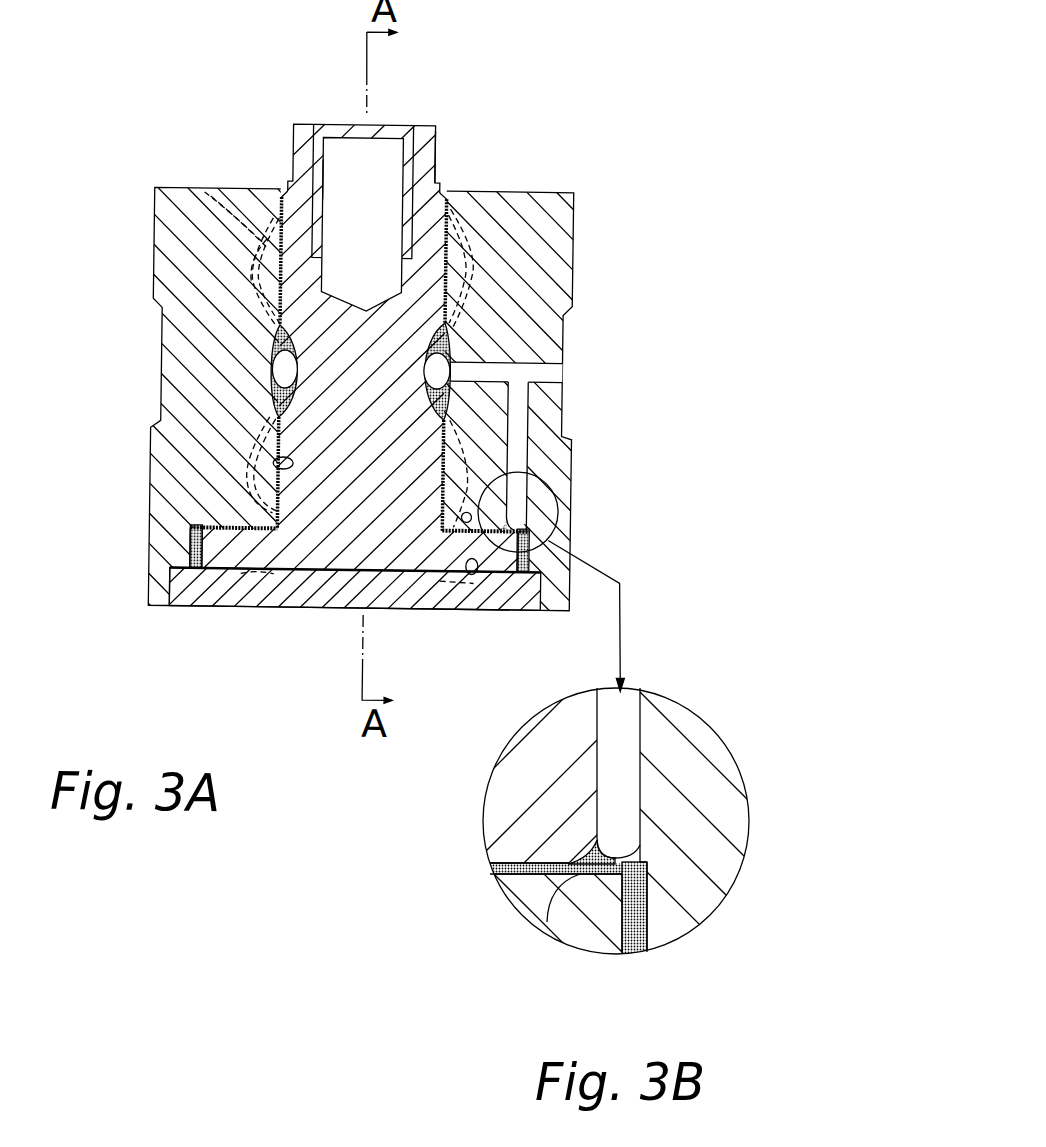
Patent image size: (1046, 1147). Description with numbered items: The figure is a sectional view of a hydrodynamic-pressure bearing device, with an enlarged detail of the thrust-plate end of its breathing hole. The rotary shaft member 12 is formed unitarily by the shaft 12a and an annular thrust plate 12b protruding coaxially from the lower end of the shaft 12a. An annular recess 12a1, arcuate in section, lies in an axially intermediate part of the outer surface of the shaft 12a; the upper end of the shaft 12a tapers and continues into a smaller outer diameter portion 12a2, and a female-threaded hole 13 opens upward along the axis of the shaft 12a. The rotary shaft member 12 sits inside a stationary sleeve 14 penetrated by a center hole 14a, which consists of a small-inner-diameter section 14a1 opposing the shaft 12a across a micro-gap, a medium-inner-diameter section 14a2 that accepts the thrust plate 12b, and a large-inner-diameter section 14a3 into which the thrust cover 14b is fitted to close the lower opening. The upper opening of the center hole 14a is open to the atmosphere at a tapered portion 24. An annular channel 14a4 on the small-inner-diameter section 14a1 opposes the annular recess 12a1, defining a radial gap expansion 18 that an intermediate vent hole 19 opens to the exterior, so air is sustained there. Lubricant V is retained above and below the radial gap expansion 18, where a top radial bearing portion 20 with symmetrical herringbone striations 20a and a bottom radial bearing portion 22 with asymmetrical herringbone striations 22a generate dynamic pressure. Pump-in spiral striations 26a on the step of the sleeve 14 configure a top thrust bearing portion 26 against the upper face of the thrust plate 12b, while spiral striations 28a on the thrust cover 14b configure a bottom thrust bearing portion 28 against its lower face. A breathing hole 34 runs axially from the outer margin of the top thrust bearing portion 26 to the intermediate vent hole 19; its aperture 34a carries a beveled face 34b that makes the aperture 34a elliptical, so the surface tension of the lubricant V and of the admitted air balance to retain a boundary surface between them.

In FIG. 3A, the rotary shaft member 12 is at (424, 122).
In FIG. 3A, the shaft 12a is at (310, 125).
In FIG. 3A, the annular recess 12a1 is at (362, 217).
In FIG. 3A, the smaller outer diameter portion 12a2 is at (432, 142).
In FIG. 3A, the thrust plate 12b is at (172, 571).
In FIG. 3B, the thrust plate 12b is at (592, 922).
In FIG. 3A, the female-threaded hole 13 is at (321, 164).
In FIG. 3A, the sleeve 14 is at (549, 187).
In FIG. 3A, the center hole 14a is at (467, 324).
In FIG. 3B, the center hole 14a is at (525, 773).
In FIG. 3A, the small-inner-diameter section 14a1 is at (466, 249).
In FIG. 3A, the medium-inner-diameter section 14a2 is at (194, 550).
In FIG. 3A, the large-inner-diameter section 14a3 is at (173, 586).
In FIG. 3A, the annular channel 14a4 is at (254, 263).
In FIG. 3A, the thrust cover 14b is at (301, 607).
In FIG. 3A, the radial gap expansion 18 is at (273, 366).
In FIG. 3A, the intermediate vent hole 19 is at (508, 371).
In FIG. 3A, the top radial bearing portion 20 is at (249, 191).
In FIG. 3A, the herringbone striations 20a is at (197, 192).
In FIG. 3A, the bottom radial bearing portion 22 is at (274, 462).
In FIG. 3A, the herringbone striations 22a is at (256, 487).
In FIG. 3A, the tapered portion 24 is at (279, 194).
In FIG. 3A, the top thrust bearing portion 26 is at (432, 590).
In FIG. 3A, the spiral striations 26a is at (256, 509).
In FIG. 3A, the bottom thrust bearing portion 28 is at (478, 573).
In FIG. 3A, the spiral striations 28a is at (265, 568).
In FIG. 3A, the breathing hole 34 is at (514, 471).
In FIG. 3B, the breathing hole 34 is at (622, 765).
In FIG. 3B, the aperture 34a is at (607, 850).
In FIG. 3B, the beveled face 34b is at (570, 876).
In FIG. 3A, the lubricant V is at (443, 232).
In FIG. 3B, the lubricant V is at (618, 920).